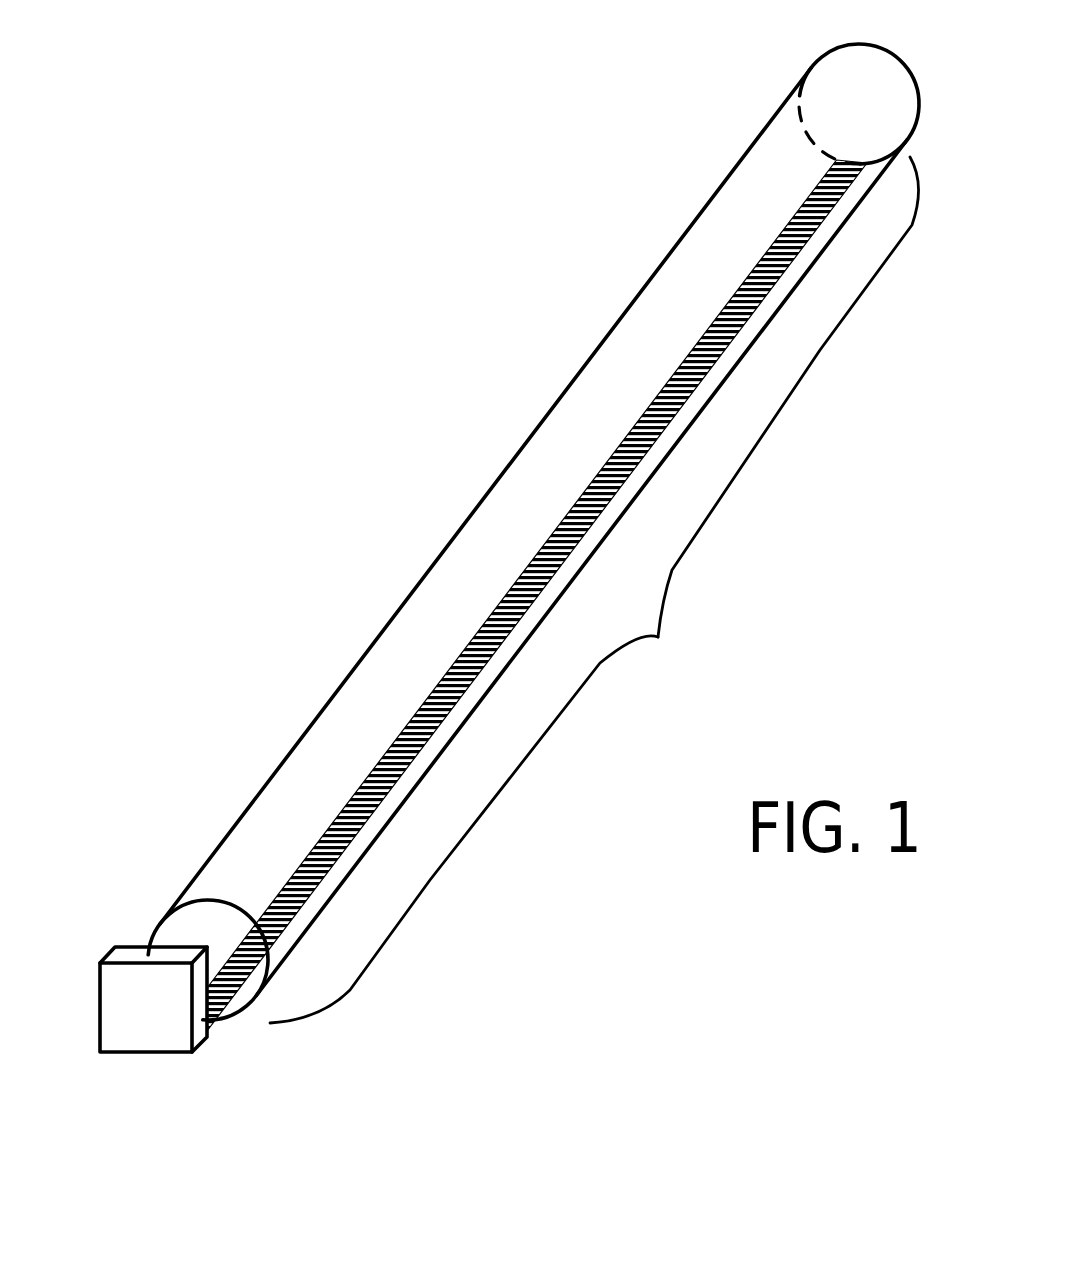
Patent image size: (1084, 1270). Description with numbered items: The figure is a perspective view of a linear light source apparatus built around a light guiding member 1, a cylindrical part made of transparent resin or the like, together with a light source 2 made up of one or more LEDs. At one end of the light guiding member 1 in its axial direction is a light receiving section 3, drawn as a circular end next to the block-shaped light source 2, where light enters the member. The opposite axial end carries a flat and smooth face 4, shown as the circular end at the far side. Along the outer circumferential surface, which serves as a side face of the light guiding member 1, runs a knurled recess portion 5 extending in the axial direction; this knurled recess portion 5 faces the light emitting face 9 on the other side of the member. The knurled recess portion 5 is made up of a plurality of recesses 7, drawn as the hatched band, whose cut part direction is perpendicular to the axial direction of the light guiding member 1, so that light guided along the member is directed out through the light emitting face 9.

The light guiding member 1 is at (509, 550).
The light source 2 is at (145, 1035).
The light receiving section 3 is at (192, 937).
The flat and smooth face 4 is at (860, 87).
The knurled recess portion 5 is at (531, 203).
The recesses 7 is at (487, 653).
The light emitting face 9 is at (517, 483).